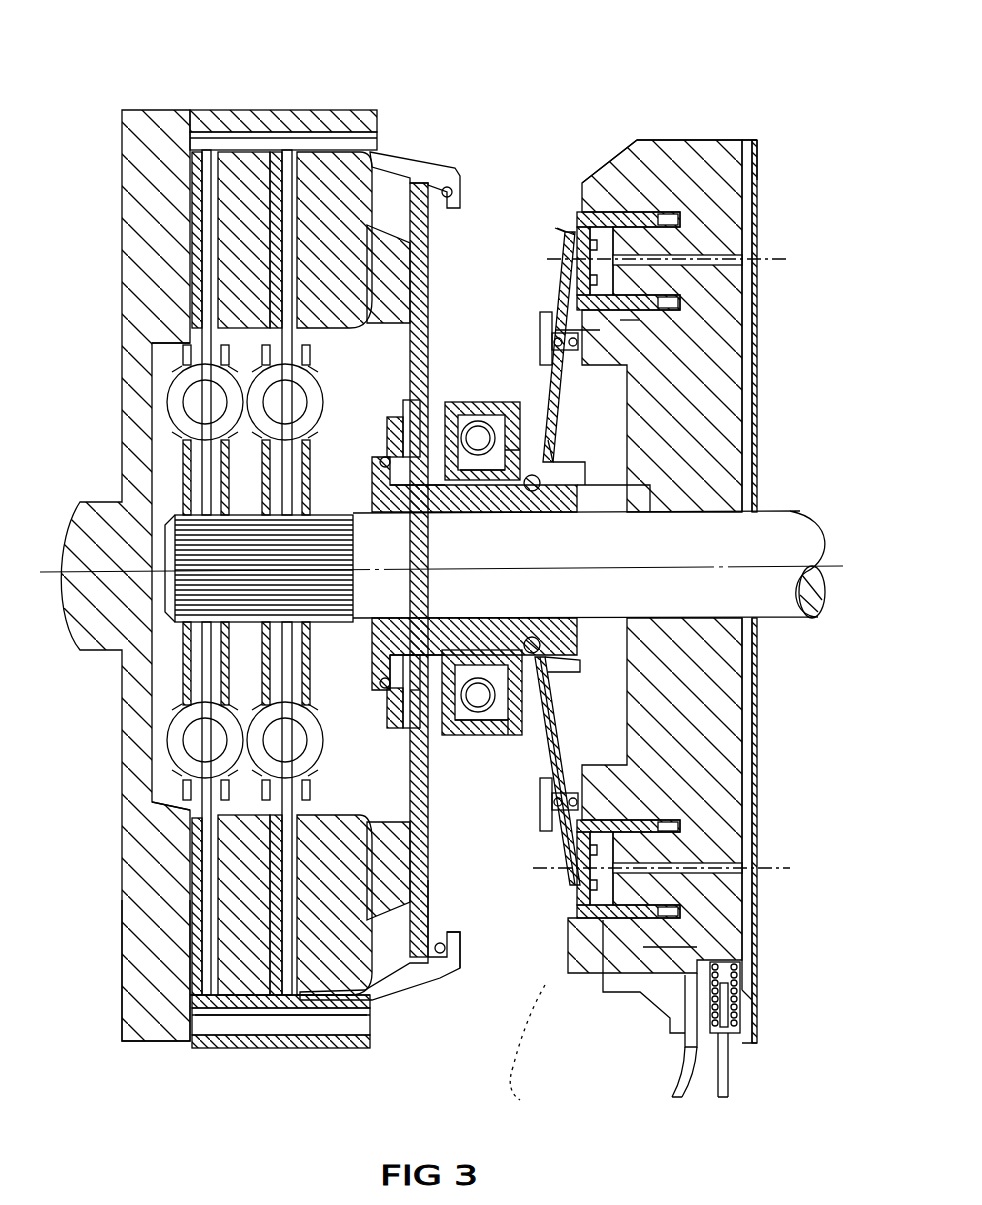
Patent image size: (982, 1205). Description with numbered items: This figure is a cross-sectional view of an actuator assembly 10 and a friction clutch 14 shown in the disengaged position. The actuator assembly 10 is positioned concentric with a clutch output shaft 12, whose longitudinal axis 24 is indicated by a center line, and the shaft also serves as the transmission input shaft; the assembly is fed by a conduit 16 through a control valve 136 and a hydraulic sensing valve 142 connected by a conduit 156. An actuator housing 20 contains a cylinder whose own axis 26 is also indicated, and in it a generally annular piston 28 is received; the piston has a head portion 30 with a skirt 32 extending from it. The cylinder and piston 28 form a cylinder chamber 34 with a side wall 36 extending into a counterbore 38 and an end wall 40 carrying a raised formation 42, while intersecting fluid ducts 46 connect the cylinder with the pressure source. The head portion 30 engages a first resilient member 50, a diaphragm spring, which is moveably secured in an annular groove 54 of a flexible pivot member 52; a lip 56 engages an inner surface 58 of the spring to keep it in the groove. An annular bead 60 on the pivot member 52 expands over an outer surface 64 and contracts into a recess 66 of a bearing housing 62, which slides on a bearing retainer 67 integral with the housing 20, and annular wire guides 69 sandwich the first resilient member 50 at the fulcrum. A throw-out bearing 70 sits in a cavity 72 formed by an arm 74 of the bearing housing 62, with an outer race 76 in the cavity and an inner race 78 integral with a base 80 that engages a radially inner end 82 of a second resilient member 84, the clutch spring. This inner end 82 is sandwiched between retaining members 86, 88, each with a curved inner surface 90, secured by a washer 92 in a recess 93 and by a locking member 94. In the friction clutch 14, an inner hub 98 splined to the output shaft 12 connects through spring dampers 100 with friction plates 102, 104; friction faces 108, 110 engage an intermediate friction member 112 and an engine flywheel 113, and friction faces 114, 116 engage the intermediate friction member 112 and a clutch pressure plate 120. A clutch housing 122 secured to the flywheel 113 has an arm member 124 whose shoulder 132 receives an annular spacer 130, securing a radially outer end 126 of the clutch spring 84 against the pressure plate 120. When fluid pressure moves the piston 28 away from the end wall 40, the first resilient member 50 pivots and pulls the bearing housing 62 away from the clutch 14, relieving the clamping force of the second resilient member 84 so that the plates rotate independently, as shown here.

The actuator assembly 10 is at (765, 90).
The clutch output shaft 12 is at (790, 528).
The friction clutch 14 is at (303, 1050).
The conduit 16 is at (730, 1068).
The actuator housing 20 is at (720, 450).
The shaft axis 24 is at (826, 562).
The bore axis 26 is at (790, 262).
The piston 28 is at (620, 205).
The head portion 30 is at (552, 918).
The skirt 32 is at (652, 150).
The cylinder chamber 34 is at (590, 235).
The side wall 36 is at (680, 310).
The counterbore 38 is at (695, 145).
The end wall 40 is at (600, 230).
The raised formation 42 is at (610, 330).
The fluid ducts 46 is at (735, 255).
The first resilient member 50 is at (560, 712).
The pivot member 52 is at (560, 452).
The annular groove 54 is at (550, 465).
The lip 56 is at (555, 675).
The inner surface 58 is at (560, 770).
The annular bead 60 is at (540, 642).
The bearing housing 62 is at (610, 500).
The outer surface 64 is at (565, 475).
The recess 66 is at (540, 490).
The bearing retainer 67 is at (465, 500).
The annular wire guides 69 is at (560, 320).
The bearing 70 is at (462, 410).
The cavity 72 is at (480, 718).
The arm 74 is at (478, 735).
The outer race 76 is at (478, 430).
The inner race 78 is at (505, 470).
The base 80 is at (385, 468).
The radially inner end 82 is at (400, 430).
The second resilient member 84 is at (430, 262).
The retaining member 86 is at (387, 690).
The retaining member 88 is at (410, 700).
The curved inner surface 90 is at (410, 700).
The washer 92 is at (415, 487).
The recess 93 is at (440, 652).
The locking member 94 is at (388, 682).
The inner hub 98 is at (175, 510).
The spring dampers 100 is at (175, 392).
The friction plate 102 is at (212, 160).
The friction plate 104 is at (275, 165).
The friction face 108 is at (213, 180).
The friction face 110 is at (190, 270).
The intermediate friction member 112 is at (235, 995).
The engine flywheel 113 is at (130, 965).
The friction face 114 is at (285, 180).
The friction face 116 is at (305, 165).
The clutch pressure plate 120 is at (350, 168).
The clutch housing 122 is at (320, 1048).
The arm member 124 is at (412, 975).
The radially outer end 126 is at (432, 895).
The annular spacer 130 is at (445, 955).
The shoulder 132 is at (455, 935).
The control valve 136 is at (735, 1000).
The hydraulic sensing valve 142 is at (595, 975).
The conduit 156 is at (680, 1065).